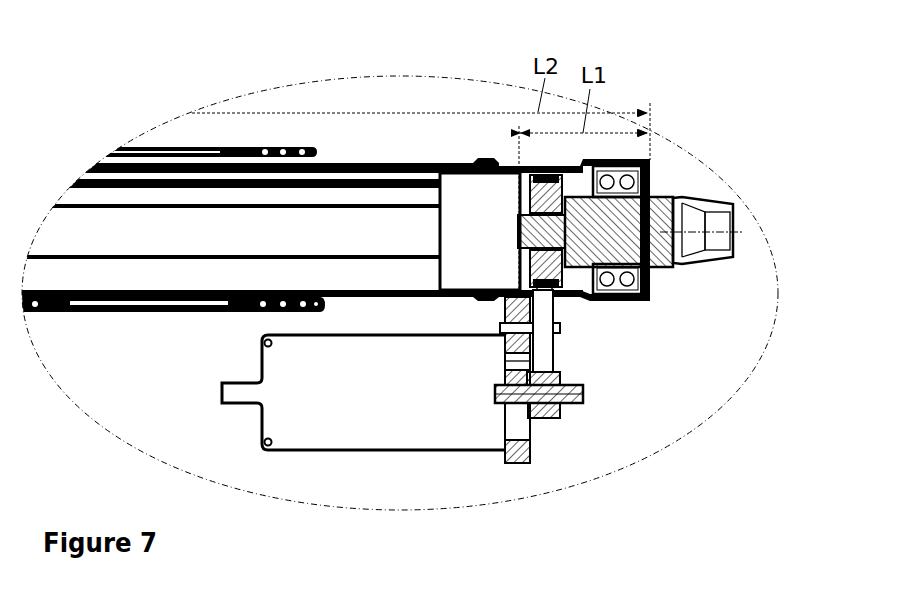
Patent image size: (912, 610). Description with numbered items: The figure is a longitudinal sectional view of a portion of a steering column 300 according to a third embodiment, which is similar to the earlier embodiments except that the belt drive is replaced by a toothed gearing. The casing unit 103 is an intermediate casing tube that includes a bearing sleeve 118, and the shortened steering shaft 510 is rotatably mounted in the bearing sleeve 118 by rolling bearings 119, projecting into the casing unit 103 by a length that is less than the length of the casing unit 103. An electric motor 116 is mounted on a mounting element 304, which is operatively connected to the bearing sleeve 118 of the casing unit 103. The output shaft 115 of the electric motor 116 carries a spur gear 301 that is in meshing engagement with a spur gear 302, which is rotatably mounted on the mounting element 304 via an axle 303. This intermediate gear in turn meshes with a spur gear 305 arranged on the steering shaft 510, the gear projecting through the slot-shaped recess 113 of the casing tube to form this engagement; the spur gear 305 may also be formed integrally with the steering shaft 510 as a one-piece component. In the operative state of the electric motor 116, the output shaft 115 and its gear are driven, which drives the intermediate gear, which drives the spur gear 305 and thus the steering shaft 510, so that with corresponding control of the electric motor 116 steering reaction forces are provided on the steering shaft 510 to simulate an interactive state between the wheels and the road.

The casing unit 103 is at (412, 165).
The bearing sleeve 118 is at (487, 160).
The steering shaft 510 is at (660, 196).
The spur gear 305 is at (683, 234).
The rolling bearings 119 is at (714, 230).
The slot-shaped recess 113 is at (697, 240).
The axle 303 is at (550, 327).
The spur gear 302 is at (553, 350).
The steering column 300 is at (722, 381).
The output shaft 115 is at (583, 398).
The spur gear 301 is at (550, 417).
The electric motor 116 is at (348, 403).
The mounting element 304 is at (513, 465).